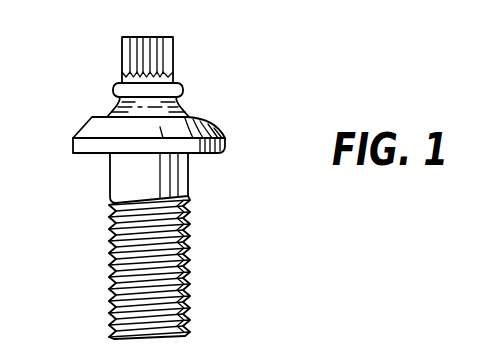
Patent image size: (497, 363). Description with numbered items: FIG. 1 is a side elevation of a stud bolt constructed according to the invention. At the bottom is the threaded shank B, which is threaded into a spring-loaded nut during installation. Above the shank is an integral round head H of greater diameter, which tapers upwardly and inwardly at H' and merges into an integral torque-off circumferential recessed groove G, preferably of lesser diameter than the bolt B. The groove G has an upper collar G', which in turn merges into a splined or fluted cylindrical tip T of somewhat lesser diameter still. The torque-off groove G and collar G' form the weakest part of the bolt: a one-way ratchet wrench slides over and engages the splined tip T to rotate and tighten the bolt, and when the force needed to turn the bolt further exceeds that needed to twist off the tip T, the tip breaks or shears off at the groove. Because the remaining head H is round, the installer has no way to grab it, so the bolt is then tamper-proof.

The splined cylindrical tip T is at (175, 48).
The upper collar G' is at (176, 79).
The torque-off circumferential recessed groove G is at (115, 89).
The tapering portion of head H' is at (173, 112).
The round head H is at (172, 138).
The threaded shank of stud bolt B is at (190, 186).